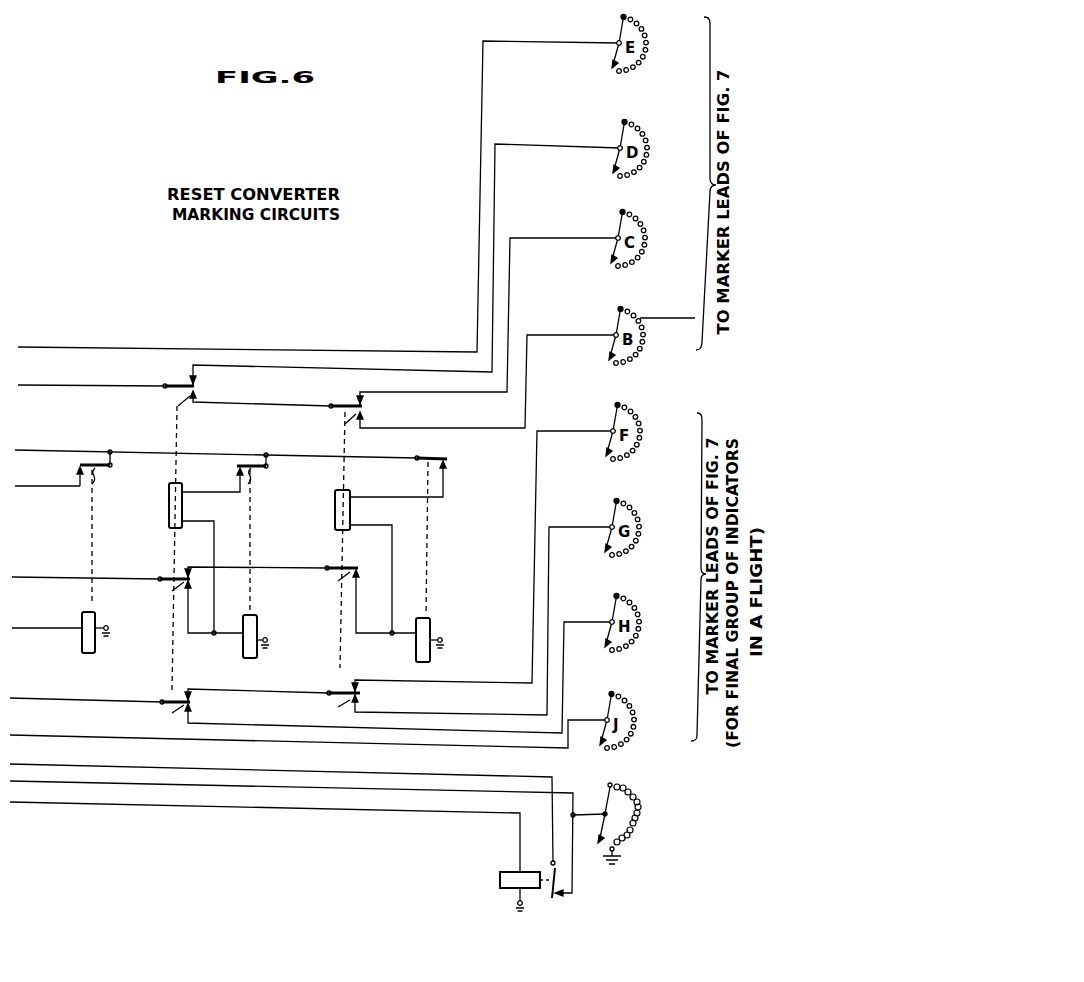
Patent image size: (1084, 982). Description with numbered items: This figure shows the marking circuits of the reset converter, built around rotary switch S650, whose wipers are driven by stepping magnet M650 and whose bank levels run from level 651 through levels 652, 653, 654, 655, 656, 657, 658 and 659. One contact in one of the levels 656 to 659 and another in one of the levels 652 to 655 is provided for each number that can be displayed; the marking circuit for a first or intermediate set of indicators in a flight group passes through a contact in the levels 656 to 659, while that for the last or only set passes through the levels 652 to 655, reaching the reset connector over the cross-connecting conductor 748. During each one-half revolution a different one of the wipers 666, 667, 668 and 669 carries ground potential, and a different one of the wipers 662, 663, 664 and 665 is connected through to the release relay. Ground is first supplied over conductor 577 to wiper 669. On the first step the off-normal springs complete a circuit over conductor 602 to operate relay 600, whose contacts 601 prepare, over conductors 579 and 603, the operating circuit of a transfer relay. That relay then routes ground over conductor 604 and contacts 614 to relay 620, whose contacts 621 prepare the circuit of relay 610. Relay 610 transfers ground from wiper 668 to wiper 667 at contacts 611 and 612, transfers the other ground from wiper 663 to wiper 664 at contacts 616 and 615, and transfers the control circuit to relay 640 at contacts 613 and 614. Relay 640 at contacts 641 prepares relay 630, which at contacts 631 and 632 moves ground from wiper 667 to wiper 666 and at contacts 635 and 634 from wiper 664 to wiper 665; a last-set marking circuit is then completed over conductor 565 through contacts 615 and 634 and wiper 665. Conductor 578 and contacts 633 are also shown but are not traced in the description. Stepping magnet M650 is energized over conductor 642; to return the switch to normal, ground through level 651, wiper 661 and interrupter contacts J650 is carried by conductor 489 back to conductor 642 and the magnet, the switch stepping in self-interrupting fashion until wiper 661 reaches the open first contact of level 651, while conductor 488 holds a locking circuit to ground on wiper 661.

The conductor 577 is at (62, 345).
The conductor 578 is at (62, 383).
The conductor 603 is at (62, 448).
The conductor 579 is at (62, 485).
The conductor 604 is at (62, 577).
The conductor 602 is at (62, 627).
The conductor 565 is at (62, 697).
The conductor 489 is at (61, 763).
The conductor 488 is at (61, 780).
The conductor 642 is at (61, 801).
The relay 600 is at (96, 619).
The contacts of relay 600 601 is at (105, 528).
The relay 610 is at (182, 506).
The contacts of relay 610 611 is at (185, 382).
The contacts of relay 610 612 is at (183, 396).
The contacts of relay 610 613 is at (177, 567).
The contacts of relay 610 614 is at (174, 586).
The contacts of relay 610 615 is at (178, 694).
The contacts of relay 610 616 is at (178, 706).
The relay 620 is at (258, 622).
The contacts of relay 620 621 is at (247, 490).
The relay 630 is at (350, 515).
The contacts of relay 630 631 is at (353, 394).
The contacts of relay 630 632 is at (348, 412).
The make contact of relay 630 633 is at (346, 580).
The contacts of relay 630 634 is at (340, 688).
The contacts of relay 630 635 is at (345, 700).
The relay 640 is at (430, 626).
The contacts of relay 640 641 is at (447, 467).
The switch level 651 is at (650, 814).
The bank level 652 is at (643, 722).
The bank level 653 is at (648, 624).
The bank level 654 is at (646, 529).
The bank level 655 is at (646, 433).
The bank level 656 is at (649, 337).
The bank level 657 is at (651, 240).
The bank level 658 is at (653, 150).
The bank level 659 is at (652, 45).
The wiper 661 is at (604, 802).
The wiper 662 is at (607, 713).
The wiper 663 is at (610, 613).
The wiper 664 is at (612, 520).
The wiper 665 is at (613, 425).
The wiper 666 is at (615, 328).
The wiper 667 is at (615, 228).
The wiper 668 is at (615, 141).
The wiper 669 is at (618, 35).
The cross-connecting conductor 748 is at (692, 318).
The stepping magnet M650 is at (498, 883).
The rotary switch S650 is at (613, 868).
The interrupter contacts J650 is at (557, 904).